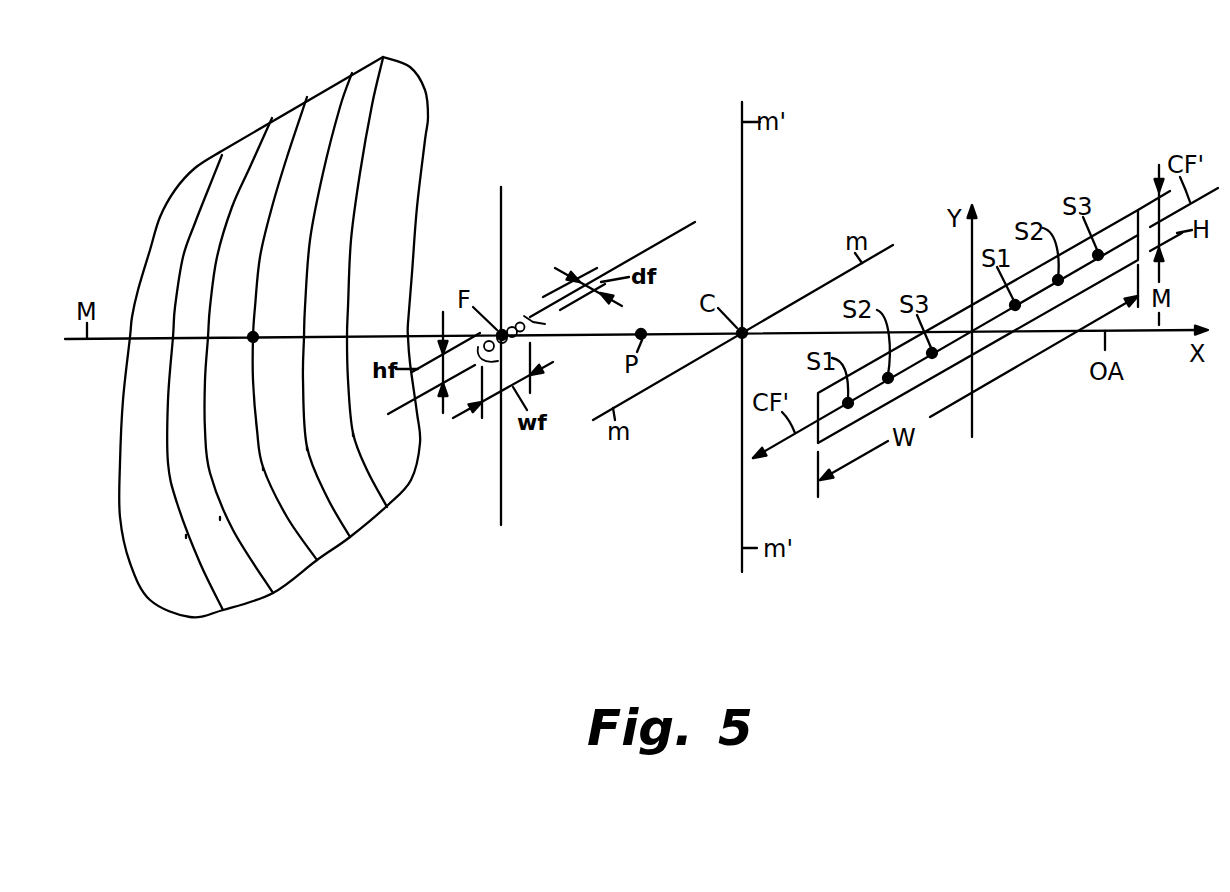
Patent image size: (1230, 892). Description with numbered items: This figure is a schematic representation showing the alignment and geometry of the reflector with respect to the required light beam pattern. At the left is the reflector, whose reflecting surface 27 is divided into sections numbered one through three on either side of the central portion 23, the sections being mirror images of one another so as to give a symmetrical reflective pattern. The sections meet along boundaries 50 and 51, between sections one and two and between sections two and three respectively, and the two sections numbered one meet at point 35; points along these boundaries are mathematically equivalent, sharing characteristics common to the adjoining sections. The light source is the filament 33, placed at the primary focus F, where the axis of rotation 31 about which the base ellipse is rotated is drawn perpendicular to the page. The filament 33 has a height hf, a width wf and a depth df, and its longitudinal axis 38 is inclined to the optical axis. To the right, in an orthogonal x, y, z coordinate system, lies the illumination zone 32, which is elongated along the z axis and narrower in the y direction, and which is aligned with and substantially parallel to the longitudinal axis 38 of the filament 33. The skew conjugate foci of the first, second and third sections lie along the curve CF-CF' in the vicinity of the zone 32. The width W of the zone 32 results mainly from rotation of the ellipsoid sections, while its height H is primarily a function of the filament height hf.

The central portion 23 is at (257, 333).
The surface of reflector 27 is at (405, 135).
The axis of rotation 31 is at (503, 485).
The filament 33 is at (518, 318).
The point for sections 1-1 35 is at (263, 467).
The longitudinal axis of the light source 38 is at (672, 235).
The boundary between sections 1-2 50 is at (220, 517).
The boundary between sections 2-3 51 is at (186, 535).
The illumination zone 32 is at (1120, 212).